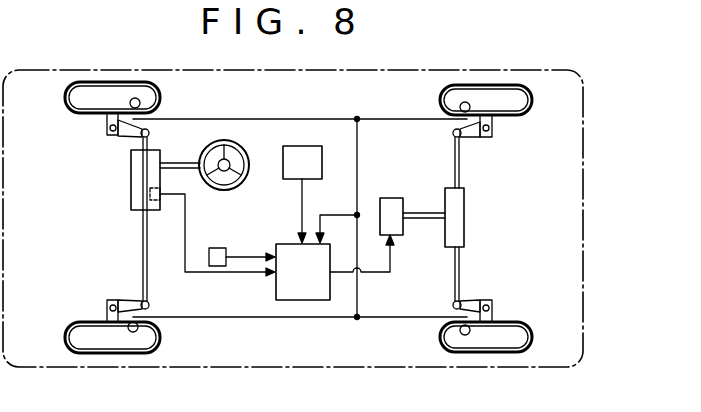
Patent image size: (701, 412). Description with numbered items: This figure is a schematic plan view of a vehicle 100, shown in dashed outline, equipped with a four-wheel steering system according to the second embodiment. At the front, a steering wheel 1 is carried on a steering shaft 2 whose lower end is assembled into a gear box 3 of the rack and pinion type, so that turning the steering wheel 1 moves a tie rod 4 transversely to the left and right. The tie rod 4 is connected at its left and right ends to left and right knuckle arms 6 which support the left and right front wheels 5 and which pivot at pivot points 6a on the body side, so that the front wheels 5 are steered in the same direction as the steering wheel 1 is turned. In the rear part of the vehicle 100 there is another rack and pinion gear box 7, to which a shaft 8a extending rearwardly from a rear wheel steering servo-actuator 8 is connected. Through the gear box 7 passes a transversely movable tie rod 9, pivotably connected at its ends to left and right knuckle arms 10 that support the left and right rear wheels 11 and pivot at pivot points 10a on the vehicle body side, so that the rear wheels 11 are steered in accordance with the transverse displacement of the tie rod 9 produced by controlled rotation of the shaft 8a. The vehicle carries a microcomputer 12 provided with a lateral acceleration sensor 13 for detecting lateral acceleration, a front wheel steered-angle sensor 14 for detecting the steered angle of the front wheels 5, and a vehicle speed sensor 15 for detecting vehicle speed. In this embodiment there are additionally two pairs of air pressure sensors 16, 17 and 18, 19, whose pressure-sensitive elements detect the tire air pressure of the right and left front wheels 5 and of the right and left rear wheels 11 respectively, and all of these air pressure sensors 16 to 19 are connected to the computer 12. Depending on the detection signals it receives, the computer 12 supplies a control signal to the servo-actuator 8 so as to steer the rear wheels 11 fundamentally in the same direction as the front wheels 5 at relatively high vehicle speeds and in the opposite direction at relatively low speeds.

The vehicle 100 is at (583, 175).
The steering wheel 1 is at (235, 188).
The steering shaft 2 is at (183, 162).
The gear box 3 is at (131, 183).
The tie rod 4 is at (143, 253).
The front wheels 5 is at (160, 96).
The knuckle arms 6 is at (120, 135).
The pivot points 6a is at (108, 128).
The gear box 7 is at (464, 222).
The rear wheel steering servo-actuator 8 is at (392, 198).
The shaft 8a is at (425, 220).
The tie rod 9 is at (459, 168).
The knuckle arms 10 is at (470, 137).
The pivot points 10a is at (490, 128).
The rear wheels 11 is at (532, 98).
The microcomputer 12 is at (276, 290).
The lateral acceleration sensor 13 is at (322, 168).
The front wheel steered-angle sensor 14 is at (156, 200).
The vehicle speed sensor 15 is at (216, 248).
The air pressure sensor 16 is at (135, 98).
The air pressure sensor 17 is at (133, 332).
The air pressure sensor 18 is at (466, 102).
The air pressure sensor 19 is at (465, 335).